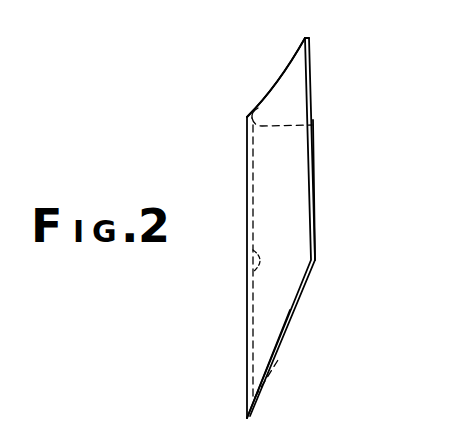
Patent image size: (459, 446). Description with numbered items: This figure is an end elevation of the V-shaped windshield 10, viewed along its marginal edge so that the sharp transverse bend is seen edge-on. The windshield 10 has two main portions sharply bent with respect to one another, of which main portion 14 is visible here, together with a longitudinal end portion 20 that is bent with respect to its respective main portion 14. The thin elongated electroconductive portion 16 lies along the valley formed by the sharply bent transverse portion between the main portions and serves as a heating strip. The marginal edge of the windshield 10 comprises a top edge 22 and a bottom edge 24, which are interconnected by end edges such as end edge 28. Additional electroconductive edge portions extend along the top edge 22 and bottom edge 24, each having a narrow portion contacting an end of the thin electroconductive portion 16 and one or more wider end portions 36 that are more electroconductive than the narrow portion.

The V-shaped windshield 10 is at (246, 230).
The main portion 14 is at (303, 232).
The thin elongated electroconductive portion 16 is at (250, 270).
The longitudinal end portion 20 is at (303, 172).
The top edge 22 is at (277, 82).
The bottom edge 24 is at (273, 392).
The end edge 28 is at (316, 207).
The wider end portion 36 is at (313, 125).